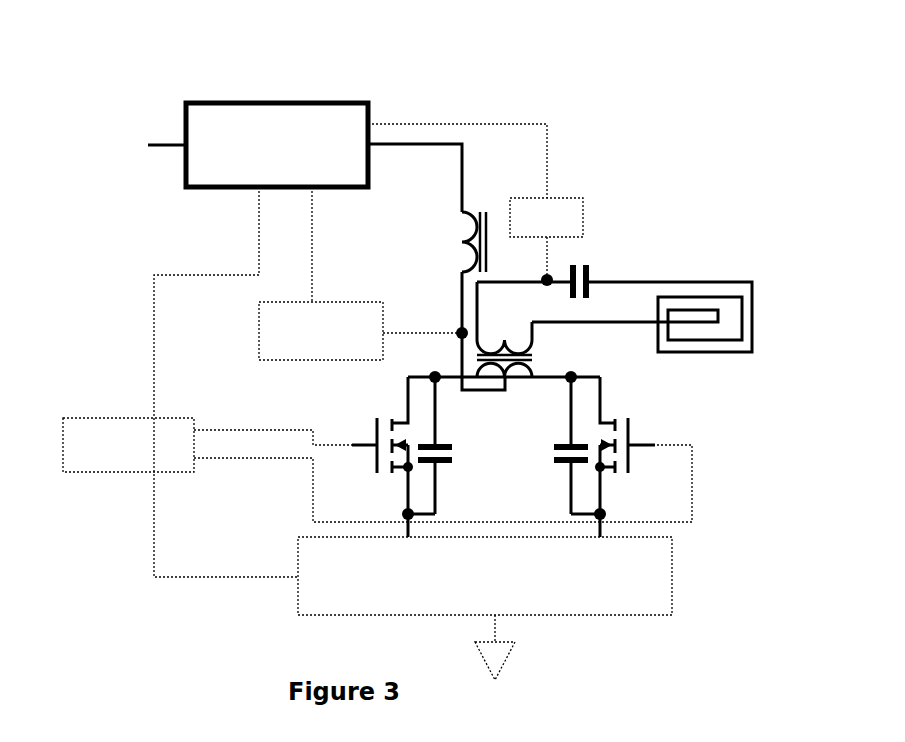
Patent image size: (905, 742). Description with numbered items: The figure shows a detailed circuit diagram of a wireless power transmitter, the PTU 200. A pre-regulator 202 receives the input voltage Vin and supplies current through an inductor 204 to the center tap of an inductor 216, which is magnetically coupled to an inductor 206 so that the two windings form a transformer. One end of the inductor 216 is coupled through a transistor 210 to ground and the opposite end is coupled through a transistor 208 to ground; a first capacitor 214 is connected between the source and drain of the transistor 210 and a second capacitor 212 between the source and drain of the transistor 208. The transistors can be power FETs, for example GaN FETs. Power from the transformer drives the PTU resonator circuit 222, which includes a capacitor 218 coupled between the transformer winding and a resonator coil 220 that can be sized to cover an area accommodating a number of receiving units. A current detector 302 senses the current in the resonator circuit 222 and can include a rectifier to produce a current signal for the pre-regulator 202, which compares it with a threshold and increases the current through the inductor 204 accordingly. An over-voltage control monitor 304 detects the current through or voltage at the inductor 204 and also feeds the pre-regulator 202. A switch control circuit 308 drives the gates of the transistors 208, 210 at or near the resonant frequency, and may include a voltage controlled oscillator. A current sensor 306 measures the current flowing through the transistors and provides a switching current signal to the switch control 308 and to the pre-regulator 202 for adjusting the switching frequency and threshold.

The PTU 200 is at (95, 66).
The pre-regulator 202 is at (298, 101).
The inductor 204 is at (446, 243).
The inductor 206 is at (492, 333).
The transistor 208 is at (630, 470).
The transistor 210 is at (390, 448).
The second capacitor 212 is at (565, 465).
The first capacitor 214 is at (434, 441).
The inductor 216 is at (532, 371).
The capacitor 218 is at (587, 262).
The resonator coil 220 is at (755, 322).
The PTU resonator circuit 222 is at (594, 308).
The current detector 302 is at (553, 197).
The over-voltage control monitor 304 is at (301, 306).
The current sensor 306 is at (645, 583).
The switch control circuit 308 is at (90, 432).